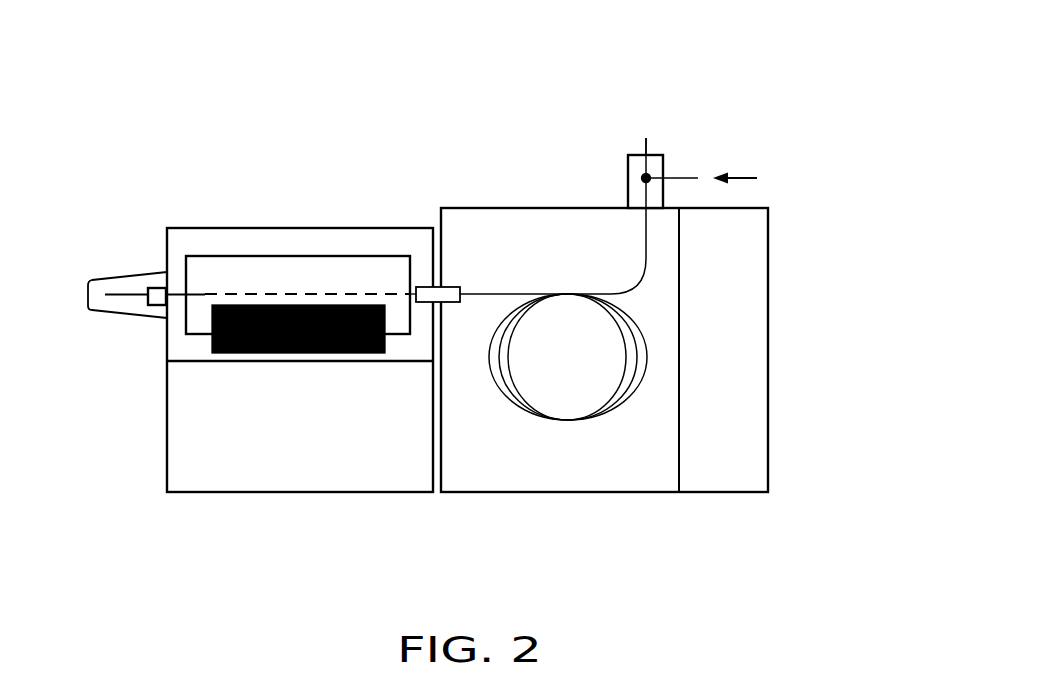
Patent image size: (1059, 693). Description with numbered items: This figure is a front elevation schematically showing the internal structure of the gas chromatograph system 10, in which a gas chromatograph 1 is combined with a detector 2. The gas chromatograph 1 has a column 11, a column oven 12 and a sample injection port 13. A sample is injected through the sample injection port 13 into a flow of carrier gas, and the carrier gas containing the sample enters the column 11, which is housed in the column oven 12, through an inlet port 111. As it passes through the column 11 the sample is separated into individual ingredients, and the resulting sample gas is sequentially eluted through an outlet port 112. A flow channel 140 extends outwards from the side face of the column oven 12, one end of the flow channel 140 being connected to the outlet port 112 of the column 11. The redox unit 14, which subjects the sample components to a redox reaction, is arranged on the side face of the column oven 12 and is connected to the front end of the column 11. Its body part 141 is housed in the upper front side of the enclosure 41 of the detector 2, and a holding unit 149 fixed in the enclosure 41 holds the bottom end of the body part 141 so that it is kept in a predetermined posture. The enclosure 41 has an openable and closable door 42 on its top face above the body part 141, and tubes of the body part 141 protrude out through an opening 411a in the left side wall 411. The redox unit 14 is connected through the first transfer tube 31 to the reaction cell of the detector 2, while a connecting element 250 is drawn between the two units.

The gas chromatograph system 10 is at (632, 65).
The gas chromatograph 1 is at (510, 193).
The column oven 12 is at (517, 494).
The column 11 is at (612, 408).
The inlet port 111 is at (640, 217).
The outlet port 112 is at (421, 290).
The sample injection port 13 is at (663, 152).
The detector 2 is at (364, 214).
The door 42 is at (307, 227).
The enclosure 41 is at (268, 494).
The redox unit 14 is at (223, 243).
The body part 141 is at (260, 256).
The holding unit 149 is at (270, 354).
The flow channel 140 is at (248, 292).
The connection pipe 250 is at (428, 286).
The left side wall 411 is at (164, 242).
The opening 411a is at (163, 309).
The first transfer tube 31 is at (122, 291).